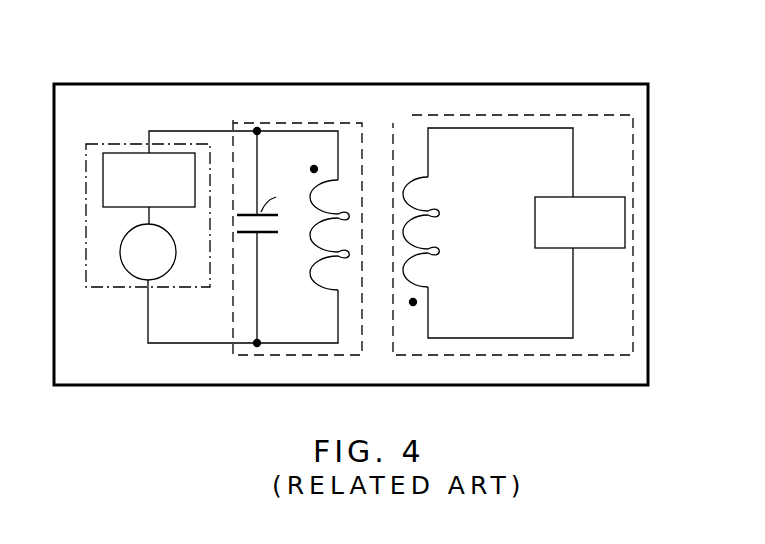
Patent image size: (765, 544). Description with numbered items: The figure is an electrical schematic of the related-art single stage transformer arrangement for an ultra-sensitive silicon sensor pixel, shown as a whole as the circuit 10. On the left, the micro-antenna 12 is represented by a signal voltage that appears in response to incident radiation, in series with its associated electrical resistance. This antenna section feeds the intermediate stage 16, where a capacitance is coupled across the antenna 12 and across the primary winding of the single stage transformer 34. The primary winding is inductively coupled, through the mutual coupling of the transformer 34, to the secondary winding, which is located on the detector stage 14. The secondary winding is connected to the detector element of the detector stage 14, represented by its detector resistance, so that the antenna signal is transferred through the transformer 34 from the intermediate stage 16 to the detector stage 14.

The power transmission system 10 is at (276, 66).
The micro-antenna member 12 is at (102, 139).
The detector stage 14 is at (518, 113).
The intermediate stage 16 is at (292, 123).
The single stage transformer 34 is at (389, 241).